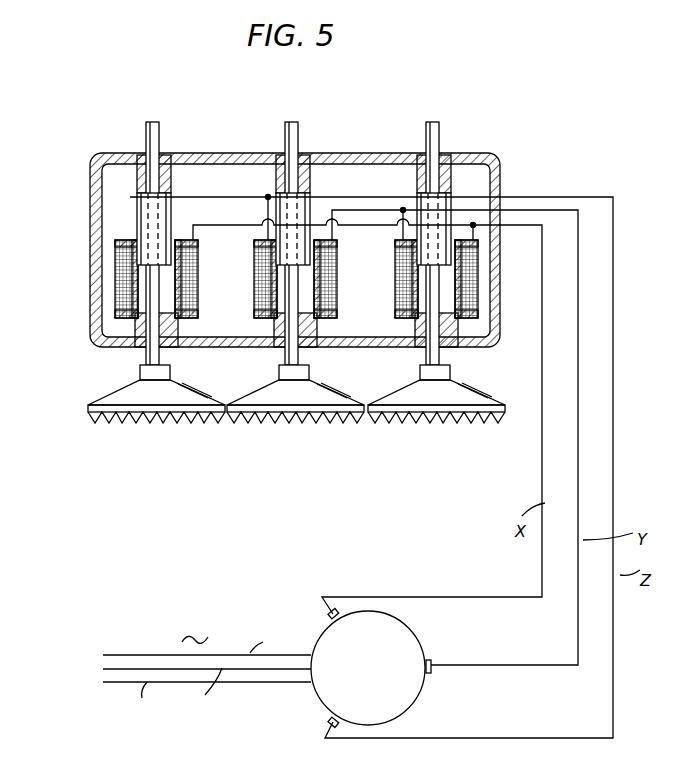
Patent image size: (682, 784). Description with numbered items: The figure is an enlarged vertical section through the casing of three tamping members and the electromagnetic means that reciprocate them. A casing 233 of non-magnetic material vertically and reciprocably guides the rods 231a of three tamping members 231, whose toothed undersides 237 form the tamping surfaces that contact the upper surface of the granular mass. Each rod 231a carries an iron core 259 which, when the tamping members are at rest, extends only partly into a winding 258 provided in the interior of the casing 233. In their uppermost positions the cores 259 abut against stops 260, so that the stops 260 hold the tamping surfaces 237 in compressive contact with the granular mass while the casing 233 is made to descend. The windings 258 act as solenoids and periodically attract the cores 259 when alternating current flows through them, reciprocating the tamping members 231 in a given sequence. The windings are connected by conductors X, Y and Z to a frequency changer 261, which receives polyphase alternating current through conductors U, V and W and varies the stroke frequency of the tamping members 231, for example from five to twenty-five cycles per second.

The tamping member 231 is at (123, 389).
The rod 231a is at (152, 132).
The casing 233 is at (95, 322).
The toothed underside 237 is at (207, 423).
The winding 258 is at (125, 276).
The iron core 259 is at (147, 215).
The stop 260 is at (168, 192).
The frequency changer 261 is at (385, 676).